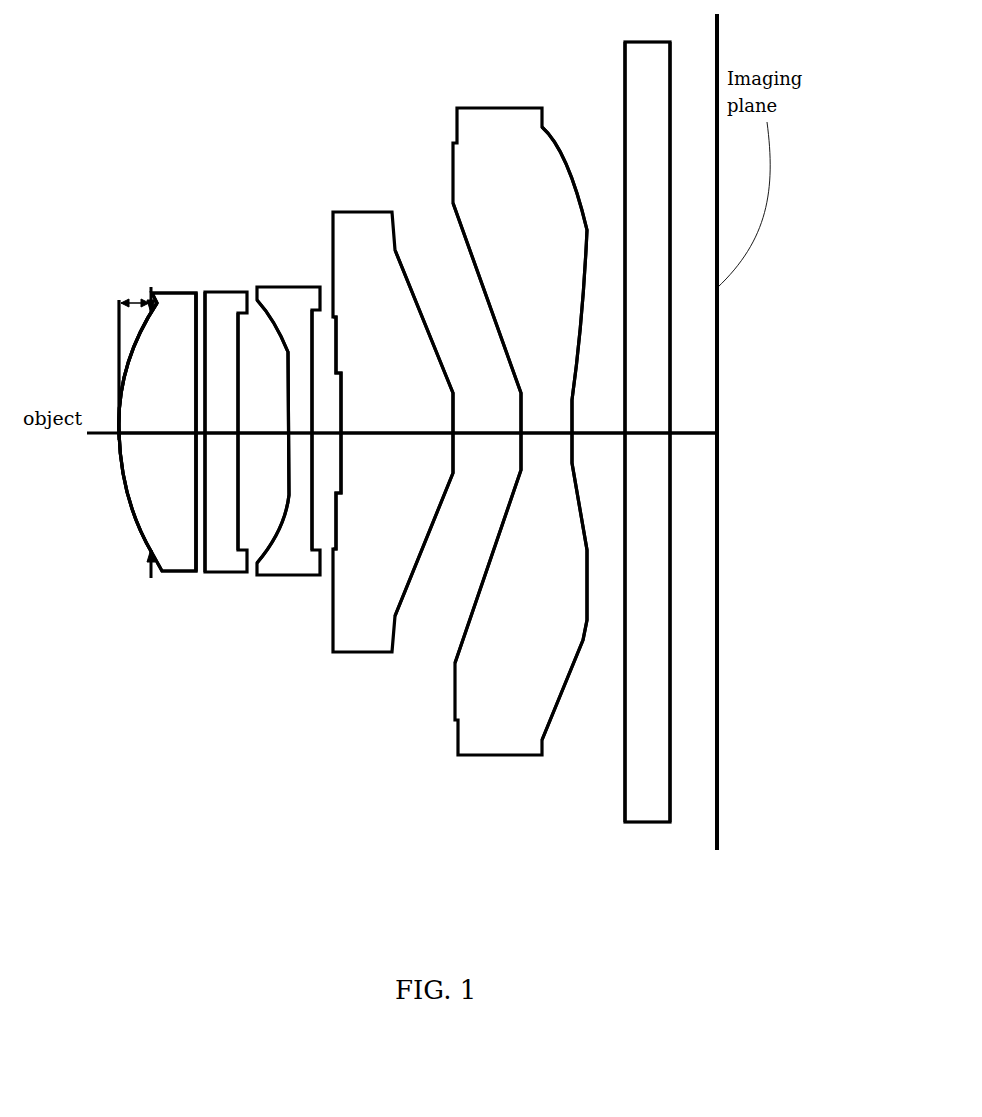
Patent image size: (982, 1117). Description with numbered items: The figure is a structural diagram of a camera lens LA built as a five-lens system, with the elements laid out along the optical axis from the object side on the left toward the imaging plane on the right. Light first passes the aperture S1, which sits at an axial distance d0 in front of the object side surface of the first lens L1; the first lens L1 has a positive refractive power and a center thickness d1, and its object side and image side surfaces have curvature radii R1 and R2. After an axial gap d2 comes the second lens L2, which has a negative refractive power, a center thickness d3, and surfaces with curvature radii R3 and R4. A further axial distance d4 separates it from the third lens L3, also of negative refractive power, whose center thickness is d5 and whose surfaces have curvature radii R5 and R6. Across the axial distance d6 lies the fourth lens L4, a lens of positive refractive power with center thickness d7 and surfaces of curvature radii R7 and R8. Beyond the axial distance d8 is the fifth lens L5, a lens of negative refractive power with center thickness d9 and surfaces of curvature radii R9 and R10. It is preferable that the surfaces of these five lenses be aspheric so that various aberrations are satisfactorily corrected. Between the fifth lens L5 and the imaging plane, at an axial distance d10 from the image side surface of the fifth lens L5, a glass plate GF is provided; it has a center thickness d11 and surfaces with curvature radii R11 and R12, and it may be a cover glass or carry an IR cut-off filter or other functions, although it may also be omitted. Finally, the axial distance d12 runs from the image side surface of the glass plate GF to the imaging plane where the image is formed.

The camera lens LA is at (160, 138).
The first lens L1 is at (157, 432).
The second lens L2 is at (226, 432).
The third lens L3 is at (288, 431).
The fourth lens L4 is at (393, 432).
The fifth lens L5 is at (520, 431).
The glass plate GF is at (647, 432).
The aperture S1 is at (150, 295).
The curvature radius of the object side surface of the first lens R1 is at (118, 442).
The curvature radius of the image side surface of the first lens R2 is at (194, 440).
The curvature radius of the object side surface of the second lens R3 is at (205, 440).
The curvature radius of the image side surface of the second lens R4 is at (239, 440).
The curvature radius of the object side surface of the third lens R5 is at (288, 452).
The curvature radius of the image side surface of the third lens R6 is at (313, 450).
The curvature radius of the object side surface of the fourth lens R7 is at (341, 445).
The curvature radius of the image side surface of the fourth lens R8 is at (452, 450).
The curvature radius of the object side surface of the fifth lens R9 is at (520, 470).
The curvature radius of the image side surface of the fifth lens R10 is at (583, 533).
The curvature radius of the object side surface of the glass plate R11 is at (625, 700).
The curvature radius of the image side surface of the glass plate R12 is at (670, 720).
The axial distance from the aperture to the object side surface of the first lens d0 is at (118, 300).
The center thickness of the first lens d1 is at (157, 420).
The axial distance from the first lens to the second lens d2 is at (186, 292).
The center thickness of the second lens d3 is at (221, 420).
The axial distance from the second lens to the third lens d4 is at (263, 420).
The center thickness of the third lens d5 is at (327, 427).
The axial distance from the third lens to the fourth lens d6 is at (300, 420).
The center thickness of the fourth lens d7 is at (397, 420).
The axial distance from the fourth lens to the fifth lens d8 is at (487, 420).
The center thickness of the fifth lens d9 is at (546, 420).
The axial distance from the fifth lens to the glass plate d10 is at (598, 420).
The center thickness of the glass plate d11 is at (647, 420).
The axial distance from the glass plate to the imaging plane d12 is at (692, 420).